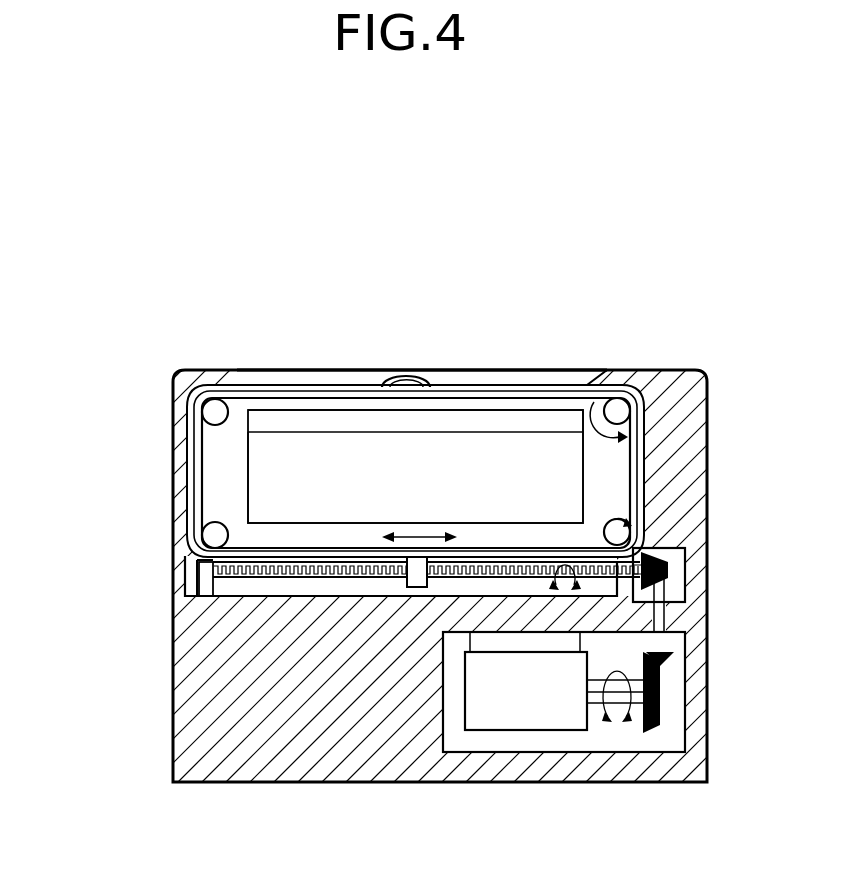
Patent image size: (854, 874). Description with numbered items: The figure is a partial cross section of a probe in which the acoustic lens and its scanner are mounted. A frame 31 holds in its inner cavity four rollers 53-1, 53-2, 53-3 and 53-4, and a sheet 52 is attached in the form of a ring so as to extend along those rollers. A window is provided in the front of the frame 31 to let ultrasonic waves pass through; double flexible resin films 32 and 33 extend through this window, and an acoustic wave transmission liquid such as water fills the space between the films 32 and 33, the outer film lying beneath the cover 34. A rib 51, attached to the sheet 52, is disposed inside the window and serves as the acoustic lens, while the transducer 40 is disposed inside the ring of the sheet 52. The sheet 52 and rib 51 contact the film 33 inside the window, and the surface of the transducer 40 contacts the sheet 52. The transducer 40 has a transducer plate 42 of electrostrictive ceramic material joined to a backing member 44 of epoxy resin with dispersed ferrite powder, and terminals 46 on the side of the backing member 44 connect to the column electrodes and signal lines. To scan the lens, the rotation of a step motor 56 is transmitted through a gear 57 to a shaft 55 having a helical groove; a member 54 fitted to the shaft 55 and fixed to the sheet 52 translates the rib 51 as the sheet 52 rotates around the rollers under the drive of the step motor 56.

The frame 31 is at (684, 380).
The flexible resin film 32 is at (530, 370).
The flexible resin film 33 is at (478, 383).
The transparent cover 34 is at (317, 377).
The transducer 40 is at (107, 393).
The transducer plate 42 is at (272, 481).
The backing member 44 is at (270, 487).
The terminals 46 is at (272, 427).
The rib 51 is at (400, 380).
The sheet 52 is at (637, 472).
The roller 53-1 is at (620, 407).
The roller 53-2 is at (213, 407).
The roller 53-3 is at (210, 540).
The roller 53-4 is at (625, 535).
The member 54 is at (410, 588).
The shaft 55 is at (225, 590).
The step motor 56 is at (505, 722).
The gear 57 is at (718, 548).